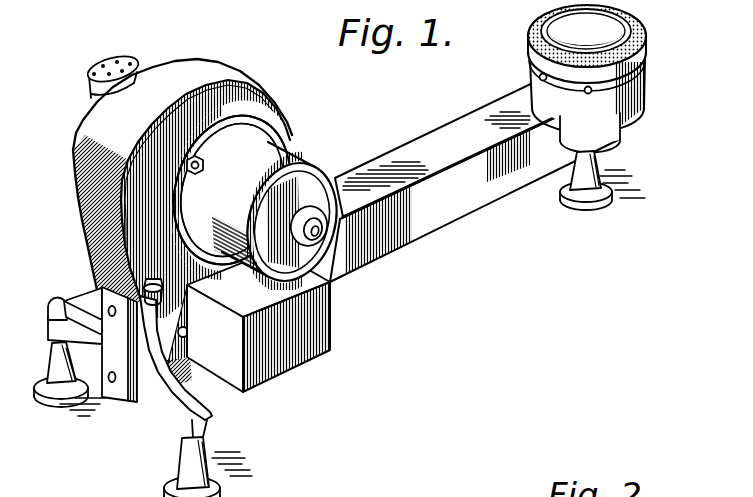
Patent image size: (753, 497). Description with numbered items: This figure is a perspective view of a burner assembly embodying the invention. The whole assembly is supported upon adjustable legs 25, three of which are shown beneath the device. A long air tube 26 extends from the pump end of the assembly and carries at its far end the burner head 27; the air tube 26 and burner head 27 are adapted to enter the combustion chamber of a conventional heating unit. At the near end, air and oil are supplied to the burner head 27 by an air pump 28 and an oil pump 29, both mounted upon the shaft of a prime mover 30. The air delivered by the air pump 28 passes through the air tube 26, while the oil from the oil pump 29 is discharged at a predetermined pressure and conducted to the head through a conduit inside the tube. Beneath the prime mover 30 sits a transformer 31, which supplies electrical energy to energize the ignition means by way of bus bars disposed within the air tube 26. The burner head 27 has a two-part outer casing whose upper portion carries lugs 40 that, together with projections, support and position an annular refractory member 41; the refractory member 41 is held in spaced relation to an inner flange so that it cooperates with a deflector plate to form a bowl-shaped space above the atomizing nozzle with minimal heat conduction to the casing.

The adjustable legs 25 is at (622, 165).
The air tube 26 is at (431, 143).
The burner head 27 is at (644, 72).
The air pump 28 is at (227, 72).
The oil pump 29 is at (113, 55).
The prime mover 30 is at (300, 147).
The transformer 31 is at (327, 330).
The lugs 40 is at (534, 82).
The annular refractory member 41 is at (640, 33).